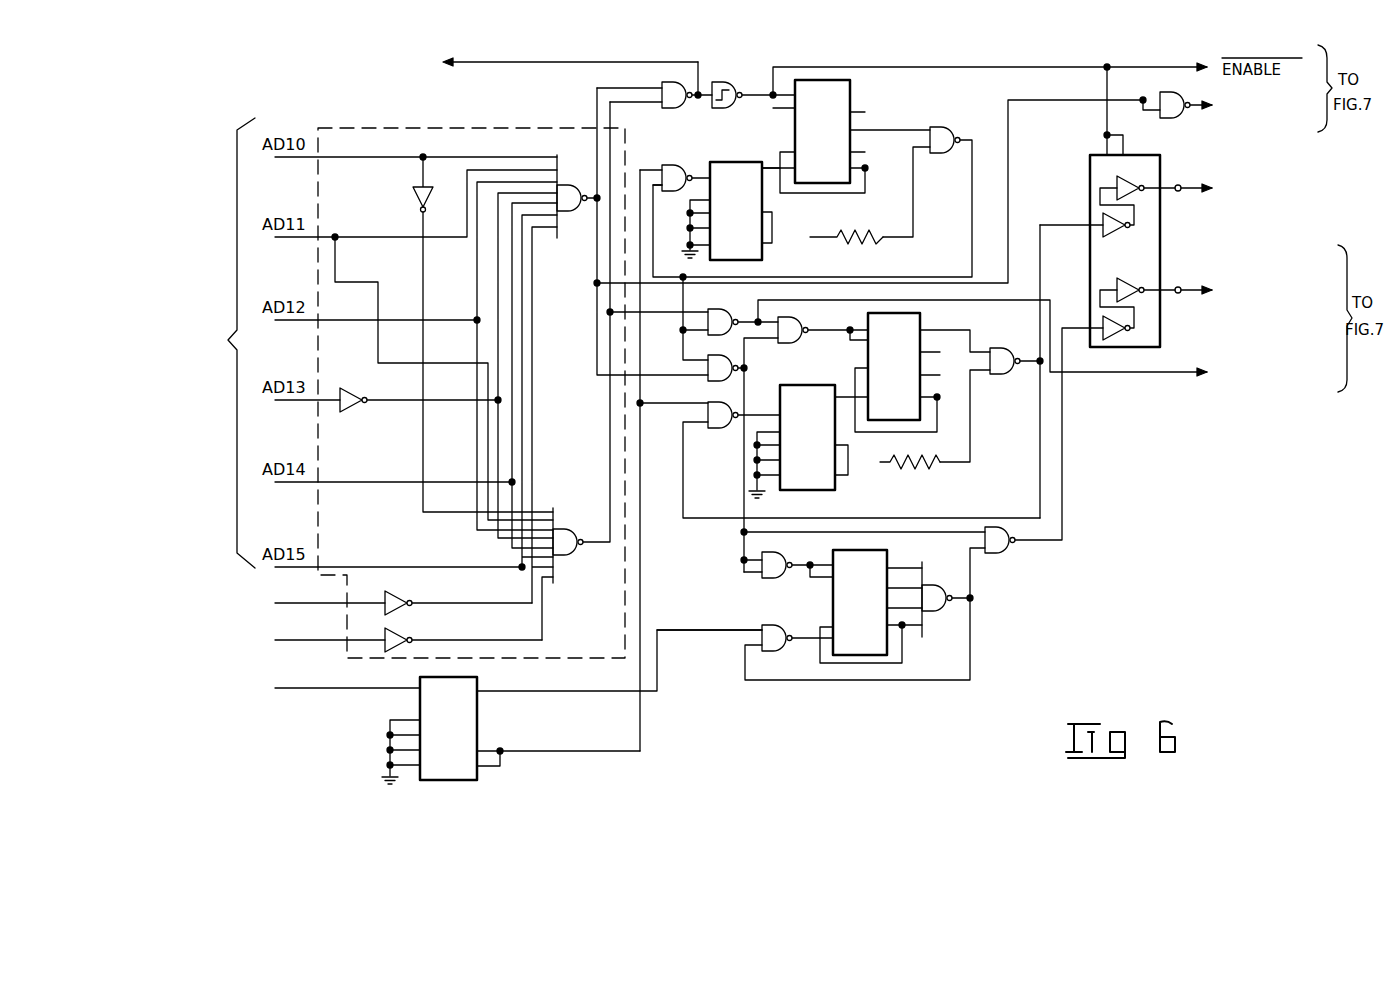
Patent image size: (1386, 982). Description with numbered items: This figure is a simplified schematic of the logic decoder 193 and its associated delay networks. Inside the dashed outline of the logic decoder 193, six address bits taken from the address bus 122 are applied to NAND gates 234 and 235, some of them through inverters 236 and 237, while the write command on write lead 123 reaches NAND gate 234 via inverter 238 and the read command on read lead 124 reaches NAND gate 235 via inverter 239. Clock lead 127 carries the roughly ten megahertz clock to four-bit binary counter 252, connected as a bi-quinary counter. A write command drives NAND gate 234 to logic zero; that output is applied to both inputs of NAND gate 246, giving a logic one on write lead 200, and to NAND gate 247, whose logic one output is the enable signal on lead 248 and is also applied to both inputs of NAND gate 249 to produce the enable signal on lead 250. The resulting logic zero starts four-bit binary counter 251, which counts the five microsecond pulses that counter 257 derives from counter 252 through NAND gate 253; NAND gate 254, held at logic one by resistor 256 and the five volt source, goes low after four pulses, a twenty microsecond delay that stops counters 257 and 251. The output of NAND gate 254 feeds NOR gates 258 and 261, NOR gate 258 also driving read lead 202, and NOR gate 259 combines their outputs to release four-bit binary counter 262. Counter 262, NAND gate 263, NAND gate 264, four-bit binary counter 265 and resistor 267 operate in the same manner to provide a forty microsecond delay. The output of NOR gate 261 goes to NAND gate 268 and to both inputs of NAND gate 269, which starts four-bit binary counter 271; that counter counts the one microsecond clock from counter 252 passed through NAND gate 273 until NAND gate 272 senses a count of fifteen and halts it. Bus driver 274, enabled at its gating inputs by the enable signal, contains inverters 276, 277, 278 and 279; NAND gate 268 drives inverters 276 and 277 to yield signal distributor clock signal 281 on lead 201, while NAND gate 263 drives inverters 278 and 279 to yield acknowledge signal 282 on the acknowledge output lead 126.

The address bus 122 is at (225, 343).
The logic decoder 193 is at (395, 124).
The NAND gate 234 is at (568, 183).
The NAND gate 235 is at (580, 516).
The inverter 236 is at (410, 200).
The inverter 237 is at (352, 400).
The inverter 238 is at (404, 598).
The inverter 239 is at (404, 636).
The write lead 123 is at (292, 602).
The read lead 124 is at (292, 640).
The clock lead 127 is at (300, 690).
The four bit binary counter 252 is at (482, 780).
The enable lead 248 is at (586, 62).
The NAND gate 247 is at (668, 108).
The NAND gate 249 is at (730, 108).
The enable lead 250 is at (910, 66).
The four bit binary counter 251 is at (853, 83).
The NAND gate 253 is at (668, 170).
The NAND gate 254 is at (940, 128).
The resistor 256 is at (837, 243).
The four-bit binary counter 257 is at (764, 258).
The NOR gate 258 is at (718, 315).
The NOR gate 259 is at (788, 322).
The NOR gate 261 is at (730, 352).
The four-bit binary counter 262 is at (922, 318).
The NAND gate 263 is at (1004, 348).
The NAND gate 264 is at (718, 430).
The four-bit binary counter 265 is at (836, 503).
The resistor 267 is at (920, 478).
The NAND gate 268 is at (1002, 558).
The NAND gate 269 is at (774, 582).
The four-bit binary counter 271 is at (880, 551).
The NAND gate 272 is at (942, 594).
The NAND gate 273 is at (775, 650).
The bus driver 274 is at (1125, 207).
The inverter 276 is at (1100, 320).
The inverter 277 is at (1122, 280).
The inverter 278 is at (1103, 215).
The inverter 279 is at (1148, 178).
The NAND gate 246 is at (1165, 100).
The write lead 200 is at (1195, 108).
The acknowledge signal lead 126 is at (1184, 183).
The acknowledge signal 282 is at (1180, 193).
The lead 201 is at (1182, 285).
The signal distributor clock signal 281 is at (1179, 296).
The read lead 202 is at (1125, 375).